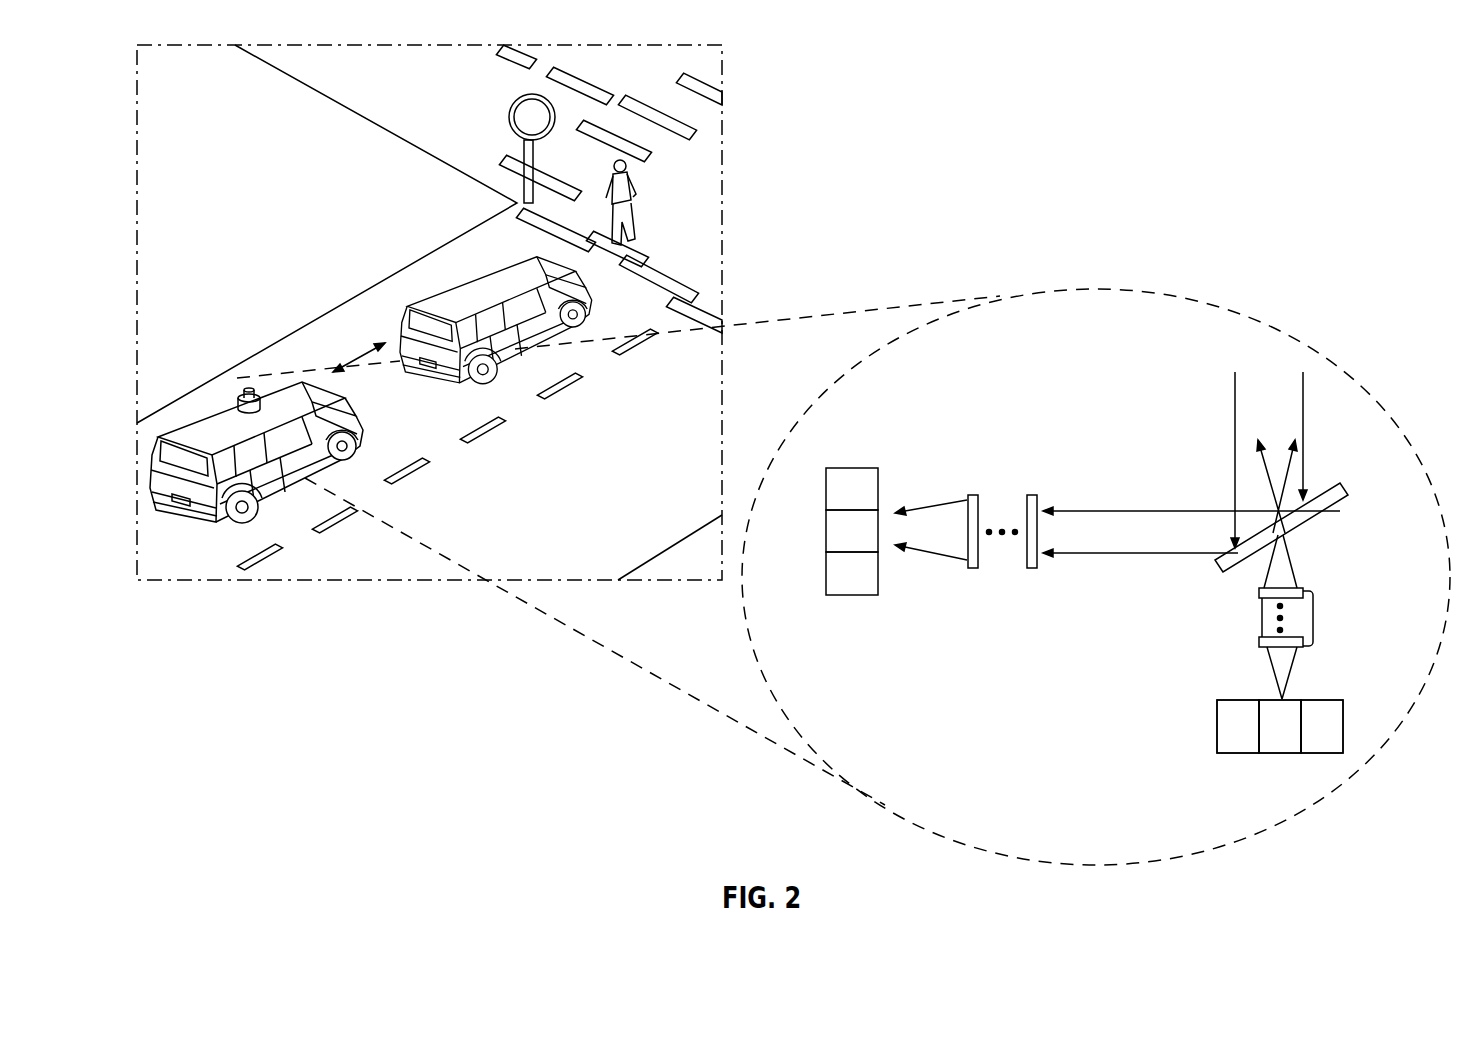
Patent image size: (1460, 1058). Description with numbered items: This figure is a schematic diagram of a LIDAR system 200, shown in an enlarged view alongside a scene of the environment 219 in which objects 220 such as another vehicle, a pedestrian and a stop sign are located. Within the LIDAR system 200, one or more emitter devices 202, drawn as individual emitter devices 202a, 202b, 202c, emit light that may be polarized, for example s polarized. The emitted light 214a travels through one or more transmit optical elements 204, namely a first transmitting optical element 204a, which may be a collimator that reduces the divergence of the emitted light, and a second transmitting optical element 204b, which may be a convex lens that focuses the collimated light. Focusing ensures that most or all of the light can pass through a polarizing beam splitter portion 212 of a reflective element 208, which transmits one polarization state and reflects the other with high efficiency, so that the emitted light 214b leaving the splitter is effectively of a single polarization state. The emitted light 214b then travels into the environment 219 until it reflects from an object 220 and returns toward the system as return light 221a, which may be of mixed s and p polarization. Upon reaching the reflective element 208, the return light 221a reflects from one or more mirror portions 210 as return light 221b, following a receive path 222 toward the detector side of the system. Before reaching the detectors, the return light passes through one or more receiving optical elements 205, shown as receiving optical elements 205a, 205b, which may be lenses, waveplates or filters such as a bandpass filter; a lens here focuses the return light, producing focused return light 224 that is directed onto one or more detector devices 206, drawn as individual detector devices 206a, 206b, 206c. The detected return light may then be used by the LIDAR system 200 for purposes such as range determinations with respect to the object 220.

The LIDAR system 200 is at (226, 378).
The emitter device 202 is at (152, 467).
The transmitter 202a is at (1217, 724).
The transmitter 202b is at (1292, 698).
The transmitter 202c is at (1343, 733).
The transmit optical element 204 is at (1264, 631).
The first transmitting optical element 204a is at (1258, 641).
The second transmitting optical element 204b is at (1258, 594).
The receiving optical element 205 is at (975, 553).
The receive lens 205a is at (1031, 571).
The receive lens 205b is at (970, 572).
The detector device 206 is at (856, 534).
The receiver 206a is at (880, 490).
The receiver 206b is at (880, 541).
The receiver 206c is at (878, 592).
The reflective element 208 is at (1342, 583).
The mirror portion 210 is at (1225, 559).
The polarizing beam splitter portion 212 is at (247, 392).
The transmitted light beam 214a is at (1265, 563).
The emitted light 214b is at (336, 365).
The environment 219 is at (679, 84).
The object 220 is at (510, 112).
The return light 221a is at (357, 372).
The return light 221b is at (1072, 509).
The receive optical path 222 is at (1124, 578).
The focused received light 224 is at (937, 505).